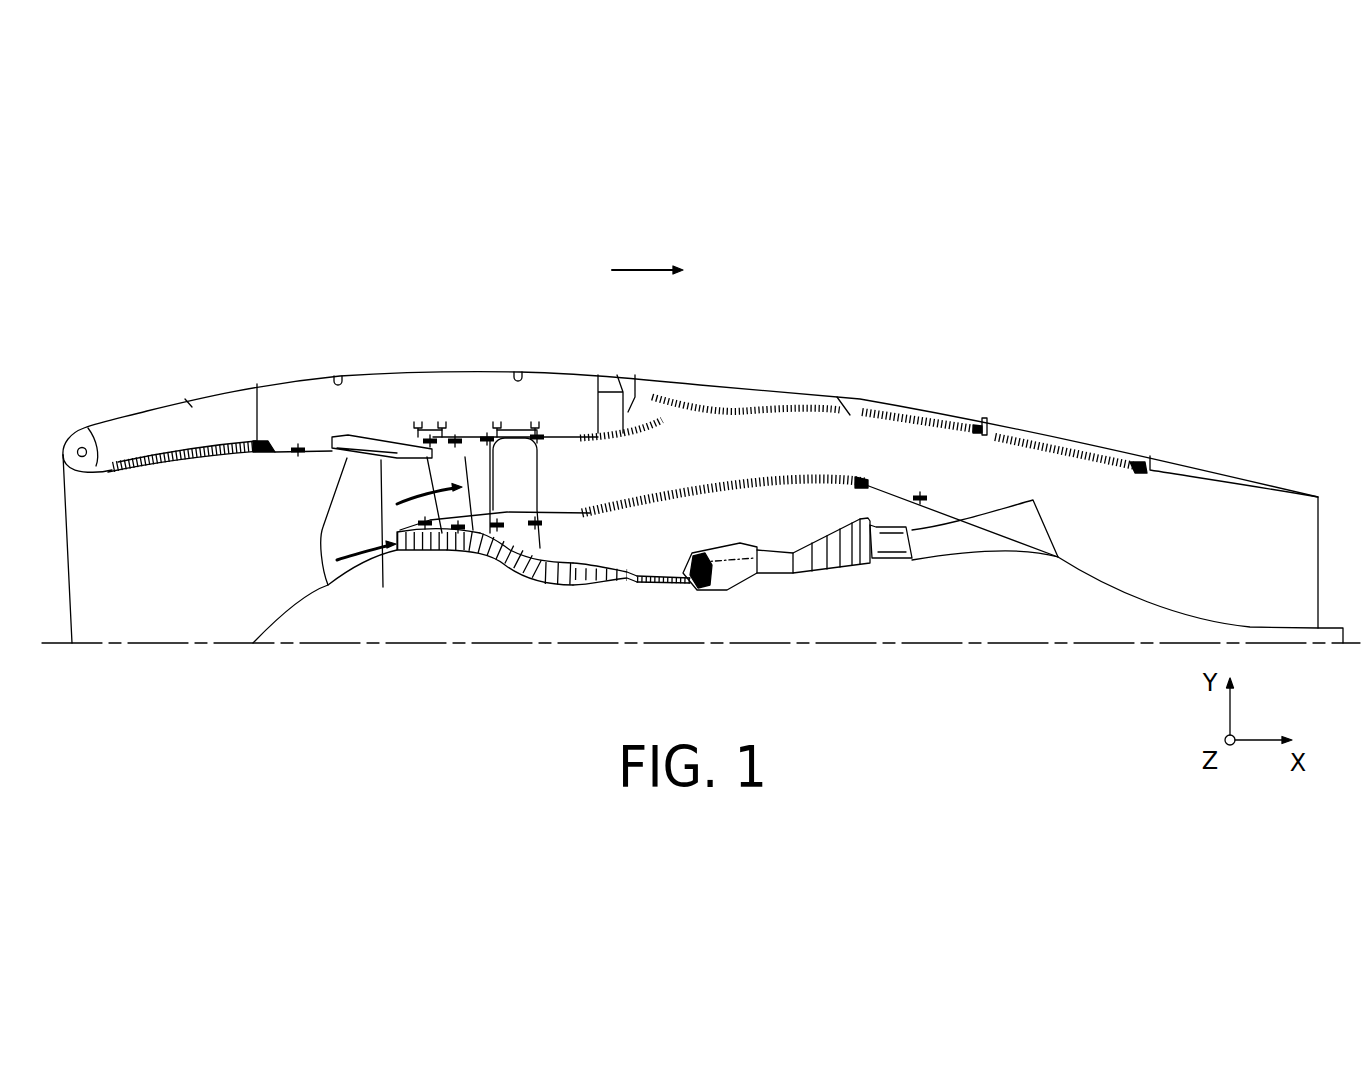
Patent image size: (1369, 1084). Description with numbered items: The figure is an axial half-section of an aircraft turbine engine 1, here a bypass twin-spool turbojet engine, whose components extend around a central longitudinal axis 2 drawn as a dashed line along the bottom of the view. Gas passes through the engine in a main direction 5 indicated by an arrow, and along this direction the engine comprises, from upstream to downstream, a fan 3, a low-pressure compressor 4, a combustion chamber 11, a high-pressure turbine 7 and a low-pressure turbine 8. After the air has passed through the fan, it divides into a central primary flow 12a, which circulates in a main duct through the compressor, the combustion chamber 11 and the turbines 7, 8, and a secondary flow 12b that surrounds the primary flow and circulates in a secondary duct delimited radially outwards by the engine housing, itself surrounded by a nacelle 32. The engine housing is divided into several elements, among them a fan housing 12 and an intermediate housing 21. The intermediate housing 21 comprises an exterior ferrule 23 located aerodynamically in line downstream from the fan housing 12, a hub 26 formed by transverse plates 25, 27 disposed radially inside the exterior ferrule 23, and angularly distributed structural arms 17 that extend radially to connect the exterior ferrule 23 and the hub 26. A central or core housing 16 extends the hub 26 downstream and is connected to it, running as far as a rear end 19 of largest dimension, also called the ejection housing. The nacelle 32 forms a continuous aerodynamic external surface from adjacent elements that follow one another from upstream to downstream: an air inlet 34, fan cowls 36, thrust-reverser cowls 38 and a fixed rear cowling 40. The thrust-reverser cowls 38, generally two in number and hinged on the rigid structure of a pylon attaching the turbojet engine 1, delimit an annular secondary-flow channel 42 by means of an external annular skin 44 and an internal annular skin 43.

The aircraft turbine engine 1 is at (277, 571).
The central longitudinal axis 2 is at (52, 648).
The fan 3 is at (327, 513).
The low-pressure compressor 4 is at (438, 553).
The main direction of gas flow 5 is at (648, 270).
The high-pressure turbine 7 is at (795, 563).
The low-pressure turbine 8 is at (847, 560).
The combustion chamber 11 is at (733, 583).
The fan housing 12 is at (407, 432).
The primary flow 12a is at (366, 562).
The secondary flow 12b is at (412, 493).
The central housing 16 is at (642, 574).
The structural arms 17 is at (482, 430).
The rear end 19 is at (840, 518).
The intermediate housing 21 is at (547, 480).
The exterior ferrule 23 is at (524, 428).
The transverse plate 25 is at (503, 568).
The hub 26 is at (522, 546).
The transverse plate 27 is at (537, 530).
The nacelle 32 is at (212, 382).
The air inlet 34 is at (147, 412).
The fan cowls 36 is at (300, 390).
The thrust-reverser cowls 38 is at (680, 392).
The fixed rear cowling 40 is at (1205, 470).
The annular secondary-flow channel 42 is at (780, 455).
The internal annular skin 43 is at (704, 485).
The external annular skin 44 is at (643, 437).